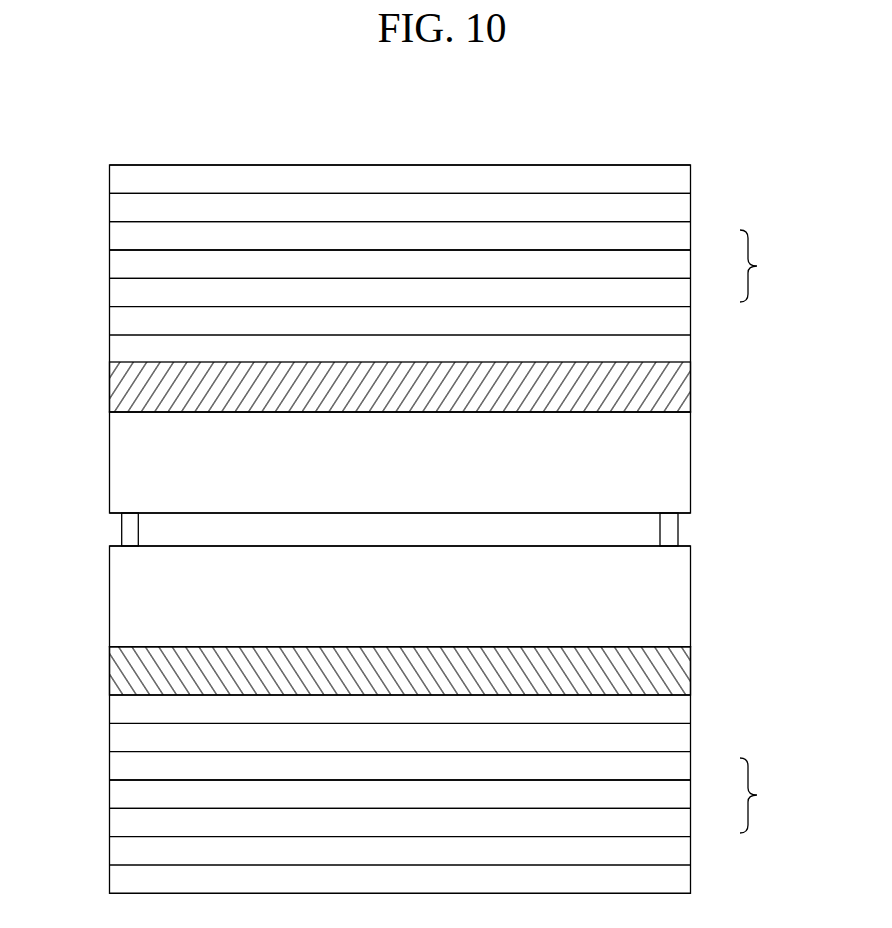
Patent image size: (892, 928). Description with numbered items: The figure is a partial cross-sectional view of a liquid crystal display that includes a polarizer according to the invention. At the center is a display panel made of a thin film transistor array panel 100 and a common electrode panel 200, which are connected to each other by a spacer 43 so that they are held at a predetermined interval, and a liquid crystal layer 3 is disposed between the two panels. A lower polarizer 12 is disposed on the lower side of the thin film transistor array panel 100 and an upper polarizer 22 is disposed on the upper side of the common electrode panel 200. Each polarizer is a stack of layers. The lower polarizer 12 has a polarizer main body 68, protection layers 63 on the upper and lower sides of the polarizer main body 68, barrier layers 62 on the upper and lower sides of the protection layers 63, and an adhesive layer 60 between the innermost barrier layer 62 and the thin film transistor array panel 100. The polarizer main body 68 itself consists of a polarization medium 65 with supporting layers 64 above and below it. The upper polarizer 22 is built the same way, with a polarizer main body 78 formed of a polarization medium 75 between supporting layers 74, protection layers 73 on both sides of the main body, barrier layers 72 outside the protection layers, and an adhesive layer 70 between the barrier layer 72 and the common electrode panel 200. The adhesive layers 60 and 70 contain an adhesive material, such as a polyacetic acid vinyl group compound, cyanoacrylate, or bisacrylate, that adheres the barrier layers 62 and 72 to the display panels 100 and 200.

The barrier layer 72 is at (677, 181).
The protection layer 73 is at (677, 209).
The supporting layer 74 is at (677, 238).
The polarization medium 75 is at (677, 266).
The polarizer main body 78 is at (760, 266).
The upper polarizer 22 is at (466, 288).
The adhesive layer 70 is at (677, 389).
The common electrode panel 200 is at (677, 463).
The liquid crystal layer 3 is at (170, 523).
The spacer 43 is at (132, 527).
The thin film transistor array panel 100 is at (677, 596).
The adhesive layer 60 is at (677, 676).
The barrier layer 62 is at (677, 712).
The protection layer 63 is at (677, 741).
The supporting layer 64 is at (677, 769).
The polarization medium 65 is at (677, 797).
The polarizer main body 68 is at (760, 795).
The lower polarizer 12 is at (466, 771).